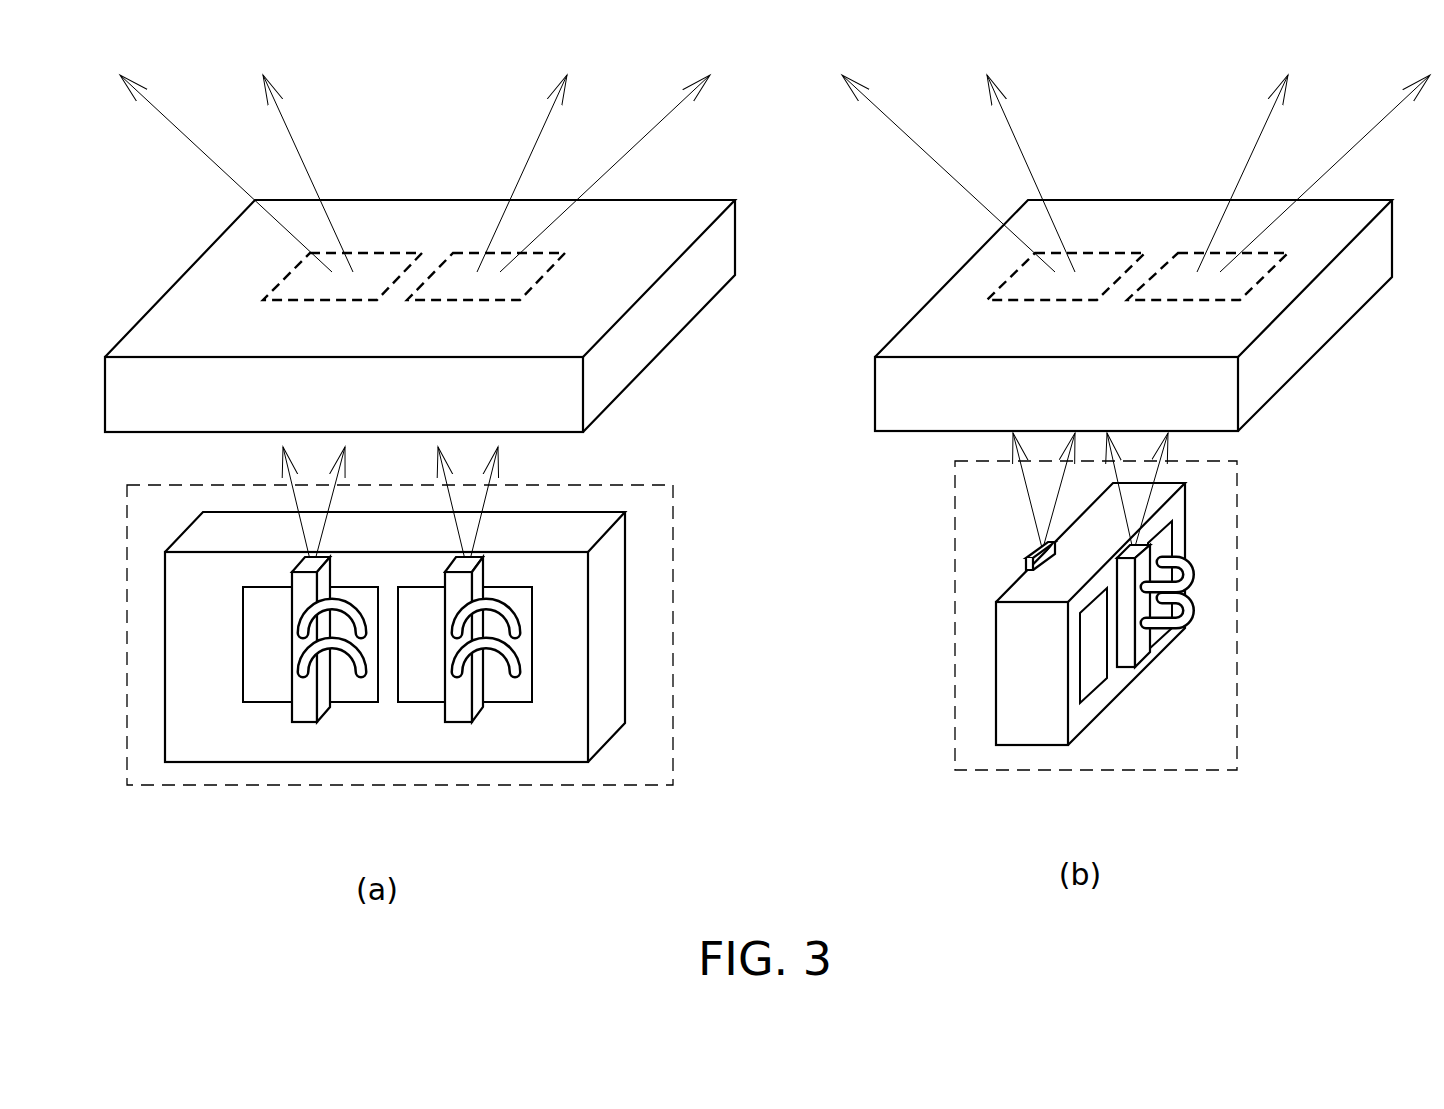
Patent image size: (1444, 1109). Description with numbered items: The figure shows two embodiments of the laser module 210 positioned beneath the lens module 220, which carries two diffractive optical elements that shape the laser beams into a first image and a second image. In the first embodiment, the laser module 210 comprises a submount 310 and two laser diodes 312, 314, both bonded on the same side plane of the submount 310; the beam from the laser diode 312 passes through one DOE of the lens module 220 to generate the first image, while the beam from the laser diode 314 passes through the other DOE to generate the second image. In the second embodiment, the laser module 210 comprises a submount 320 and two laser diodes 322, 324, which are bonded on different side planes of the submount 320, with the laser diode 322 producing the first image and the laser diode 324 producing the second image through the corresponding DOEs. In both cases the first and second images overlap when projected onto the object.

The lens module 220 is at (647, 338).
The laser module 210 is at (673, 636).
The submount 310 is at (395, 649).
The laser diode 312 is at (305, 710).
The laser diode 314 is at (460, 710).
The submount 320 is at (1030, 641).
The laser diode 322 is at (1035, 557).
The laser diode 324 is at (1143, 647).